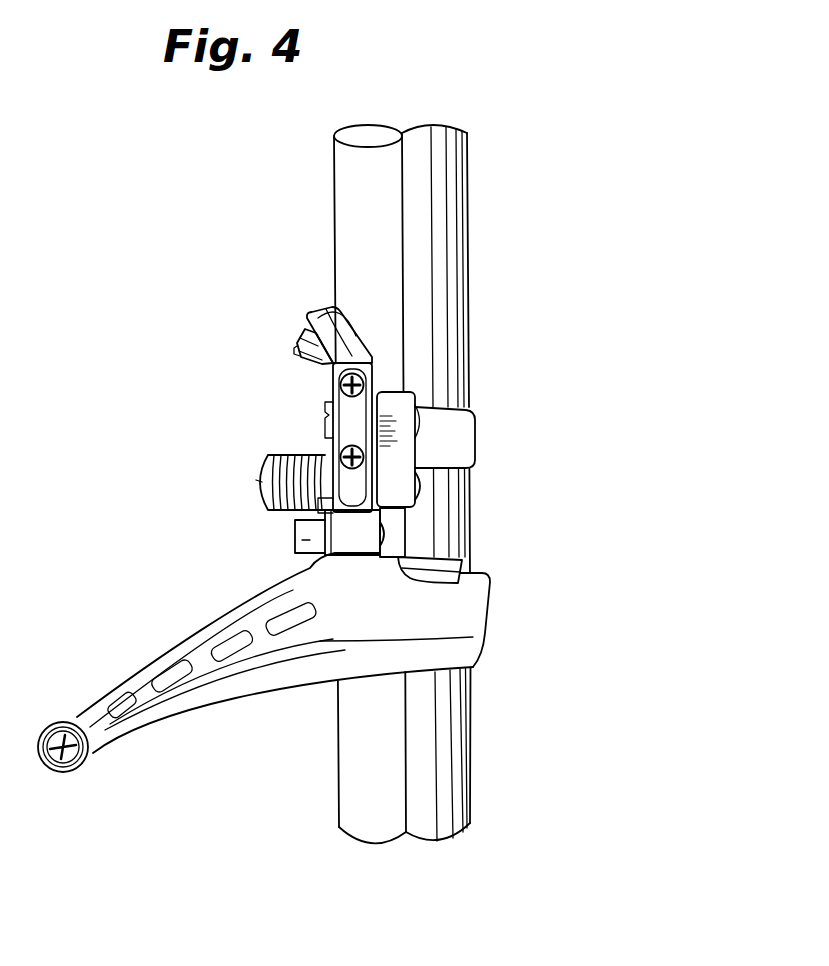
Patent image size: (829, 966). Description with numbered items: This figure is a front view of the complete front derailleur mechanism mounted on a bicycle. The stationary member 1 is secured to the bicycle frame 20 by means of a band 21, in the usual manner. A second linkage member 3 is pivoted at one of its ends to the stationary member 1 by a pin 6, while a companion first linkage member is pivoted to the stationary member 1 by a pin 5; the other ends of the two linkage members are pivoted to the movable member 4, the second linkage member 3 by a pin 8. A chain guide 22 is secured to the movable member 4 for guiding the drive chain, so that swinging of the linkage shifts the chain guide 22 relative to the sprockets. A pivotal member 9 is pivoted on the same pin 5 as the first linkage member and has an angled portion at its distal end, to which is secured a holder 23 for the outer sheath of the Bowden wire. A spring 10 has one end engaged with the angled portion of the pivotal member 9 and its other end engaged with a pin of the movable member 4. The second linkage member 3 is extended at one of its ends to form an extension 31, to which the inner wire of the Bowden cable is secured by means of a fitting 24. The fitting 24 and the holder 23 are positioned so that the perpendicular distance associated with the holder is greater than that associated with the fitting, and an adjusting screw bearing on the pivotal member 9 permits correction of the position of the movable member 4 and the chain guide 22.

The stationary member 1 is at (407, 455).
The second linkage member 3 is at (333, 375).
The movable member 4 is at (397, 532).
The pin 5 is at (423, 480).
The pin 6 is at (480, 419).
The pin 8 is at (385, 540).
The pivotal member 9 is at (280, 512).
The spring 10 is at (298, 458).
The bicycle frame 20 is at (338, 785).
The band 21 is at (450, 410).
The chain guide 22 is at (193, 642).
The holder 23 is at (292, 542).
The fitting 24 is at (310, 335).
The extension 31 is at (302, 357).